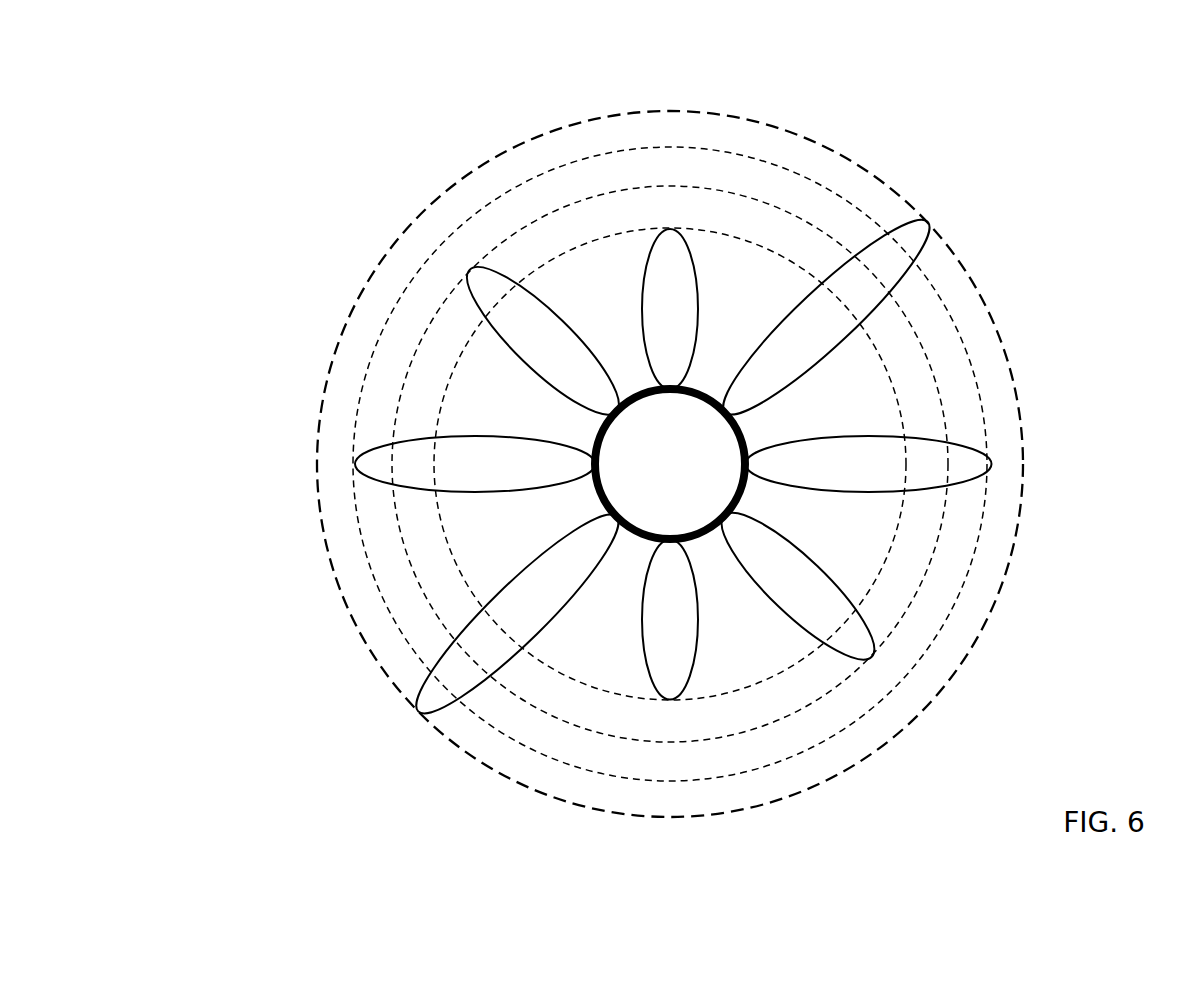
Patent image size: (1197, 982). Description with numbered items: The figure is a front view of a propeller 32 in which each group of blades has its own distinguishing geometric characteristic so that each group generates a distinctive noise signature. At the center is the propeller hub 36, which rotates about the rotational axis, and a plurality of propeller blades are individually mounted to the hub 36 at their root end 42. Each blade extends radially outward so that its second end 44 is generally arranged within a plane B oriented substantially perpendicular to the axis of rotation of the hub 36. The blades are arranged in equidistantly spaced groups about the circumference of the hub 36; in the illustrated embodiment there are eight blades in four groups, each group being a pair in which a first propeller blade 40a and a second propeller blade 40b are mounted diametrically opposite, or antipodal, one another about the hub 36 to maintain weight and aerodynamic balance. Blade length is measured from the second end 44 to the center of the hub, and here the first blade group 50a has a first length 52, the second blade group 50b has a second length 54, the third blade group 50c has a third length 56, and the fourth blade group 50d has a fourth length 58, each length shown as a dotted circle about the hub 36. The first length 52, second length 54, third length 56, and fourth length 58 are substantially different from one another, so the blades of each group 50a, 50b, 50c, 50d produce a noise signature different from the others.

The propeller 32 is at (243, 166).
The propeller hub 36 is at (752, 416).
The first propeller blade 40a is at (545, 330).
The second propeller blade 40b is at (822, 602).
The root end 42 is at (600, 393).
The second end 44 is at (493, 286).
The first blade group 50a is at (929, 208).
The second blade group 50b is at (1000, 465).
The third blade group 50c is at (893, 650).
The fourth blade group 50d is at (692, 712).
The first length 52 is at (383, 670).
The second length 54 is at (987, 520).
The third length 56 is at (822, 695).
The fourth length 58 is at (610, 695).
The plane B is at (1085, 215).